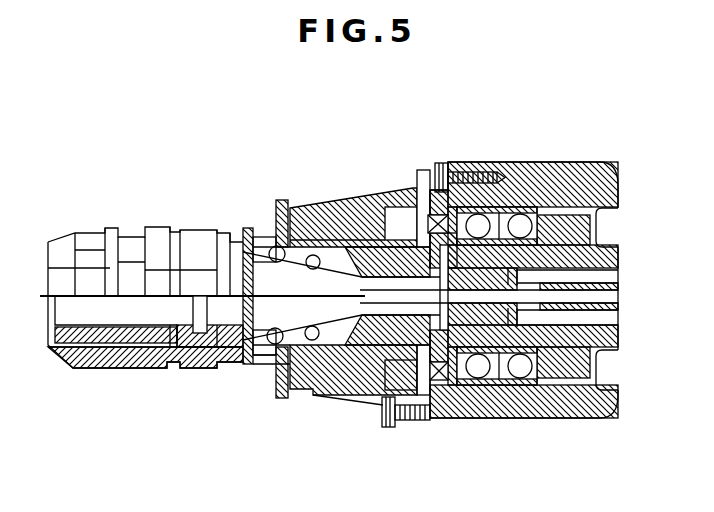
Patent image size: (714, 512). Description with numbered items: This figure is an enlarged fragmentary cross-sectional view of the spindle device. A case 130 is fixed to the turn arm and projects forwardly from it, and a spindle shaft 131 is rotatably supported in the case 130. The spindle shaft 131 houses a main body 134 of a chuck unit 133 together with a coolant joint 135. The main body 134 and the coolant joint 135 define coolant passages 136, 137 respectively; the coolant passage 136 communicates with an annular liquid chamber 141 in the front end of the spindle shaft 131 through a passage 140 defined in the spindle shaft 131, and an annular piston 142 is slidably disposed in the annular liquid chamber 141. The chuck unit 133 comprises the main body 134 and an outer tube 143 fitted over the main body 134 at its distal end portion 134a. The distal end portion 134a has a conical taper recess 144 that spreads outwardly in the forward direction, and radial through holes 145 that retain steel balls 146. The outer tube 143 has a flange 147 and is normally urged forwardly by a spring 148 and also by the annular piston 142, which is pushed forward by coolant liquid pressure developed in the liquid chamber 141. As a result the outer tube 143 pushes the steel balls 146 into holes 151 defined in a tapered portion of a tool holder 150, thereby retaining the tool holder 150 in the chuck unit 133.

The case 130 is at (572, 180).
The spindle shaft 131 is at (622, 230).
The chuck unit 133 is at (342, 205).
The main body 134 is at (496, 258).
The distal end portion 134a is at (310, 248).
The coolant joint 135 is at (618, 288).
The coolant passage 136 is at (497, 300).
The coolant passage 137 is at (605, 302).
The passage 140 is at (441, 168).
The annular liquid chamber 141 is at (398, 217).
The annular piston 142 is at (300, 390).
The outer tube 143 is at (263, 368).
The conical taper recess 144 is at (218, 238).
The radial through holes 145 is at (252, 368).
The steel balls 146 is at (266, 250).
The flange 147 is at (275, 363).
The spring 148 is at (353, 357).
The tool holder 150 is at (66, 250).
The holes 151 is at (247, 266).